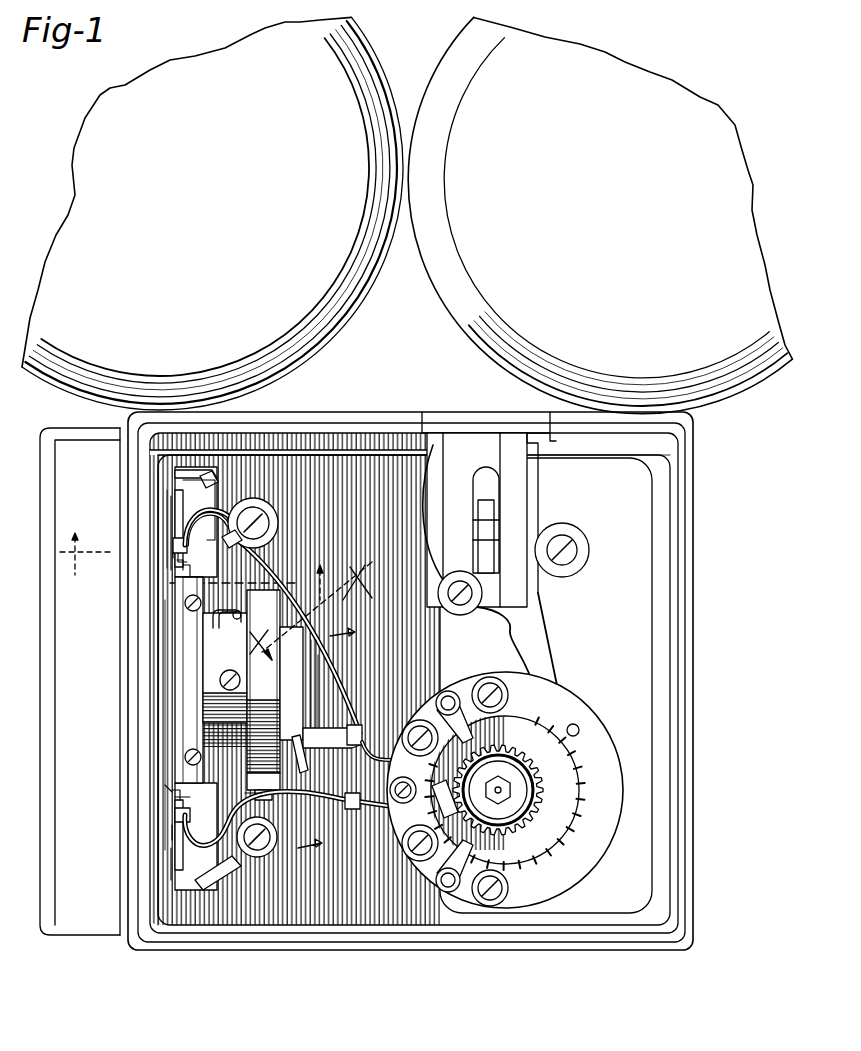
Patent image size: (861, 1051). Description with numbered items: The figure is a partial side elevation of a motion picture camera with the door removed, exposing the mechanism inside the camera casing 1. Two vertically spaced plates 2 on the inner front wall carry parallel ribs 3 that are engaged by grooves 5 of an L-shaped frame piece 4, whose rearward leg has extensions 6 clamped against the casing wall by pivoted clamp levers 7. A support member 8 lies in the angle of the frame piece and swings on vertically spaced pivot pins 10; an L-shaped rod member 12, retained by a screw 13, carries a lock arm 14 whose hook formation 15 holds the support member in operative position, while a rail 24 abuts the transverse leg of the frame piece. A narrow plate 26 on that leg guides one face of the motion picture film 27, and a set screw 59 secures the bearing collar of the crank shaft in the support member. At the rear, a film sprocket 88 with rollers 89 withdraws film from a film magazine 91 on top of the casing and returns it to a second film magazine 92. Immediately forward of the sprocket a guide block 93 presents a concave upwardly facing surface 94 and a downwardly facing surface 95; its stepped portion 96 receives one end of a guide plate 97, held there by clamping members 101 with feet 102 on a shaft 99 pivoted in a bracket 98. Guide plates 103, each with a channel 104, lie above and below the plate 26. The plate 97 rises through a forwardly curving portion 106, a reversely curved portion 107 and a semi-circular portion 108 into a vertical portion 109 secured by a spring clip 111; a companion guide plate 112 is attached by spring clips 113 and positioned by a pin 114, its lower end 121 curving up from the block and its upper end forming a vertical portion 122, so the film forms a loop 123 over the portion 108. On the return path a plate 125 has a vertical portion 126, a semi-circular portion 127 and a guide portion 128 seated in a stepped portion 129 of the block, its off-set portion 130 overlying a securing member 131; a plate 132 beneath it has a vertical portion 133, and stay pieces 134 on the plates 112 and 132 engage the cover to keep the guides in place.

The camera casing 1 is at (683, 465).
The plates 2 is at (179, 497).
The ribs 3 is at (175, 569).
The frame piece 4 is at (165, 644).
The grooves 5 is at (185, 576).
The extensions 6 is at (188, 488).
The clamp levers 7 is at (190, 478).
The support member 8 is at (203, 713).
The pivot pins 10 is at (247, 779).
The rod member 12 is at (233, 614).
The screw 13 is at (198, 566).
The lock arm 14 is at (312, 611).
The hook formation 15 is at (328, 741).
The rail 24 is at (190, 675).
The plate 26 is at (183, 579).
The motion picture film 27 is at (492, 627).
The set screw 59 is at (230, 672).
The film sprocket 88 is at (560, 813).
The rollers 89 is at (419, 720).
The film magazine 91 is at (72, 201).
The second film magazine 92 is at (744, 181).
The guide block 93 is at (430, 800).
The concave upwardly facing surface 94 is at (412, 722).
The downwardly facing surface 95 is at (430, 840).
The stepped portion 96 is at (376, 702).
The guide plate 97 is at (345, 682).
The bracket 98 is at (290, 733).
The shaft 99 is at (300, 730).
The clamping members 101 is at (321, 683).
The feet 102 is at (300, 762).
The guide plates 103 is at (183, 510).
The channel 104 is at (173, 545).
The forwardly curving portion 106 is at (313, 657).
The reversely curved portion 107 is at (227, 549).
The semi-circular portion 108 is at (207, 531).
The vertical portion 109 is at (173, 556).
The spring clip 111 is at (176, 548).
The guide plate 112 is at (270, 560).
The spring clips 113 is at (262, 522).
The pin 114 is at (330, 610).
The upwardly curving lower end 121 is at (398, 788).
The vertical portion 122 is at (220, 480).
The film loop 123 is at (167, 497).
The plate 125 is at (270, 797).
The vertical portion 126 is at (175, 803).
The semi-circular portion 127 is at (172, 832).
The guide portion 128 is at (300, 798).
The stepped portion 129 is at (342, 842).
The off-set portion 130 is at (348, 744).
The securing member 131 is at (352, 807).
The plate 132 is at (268, 848).
The vertical portion 133 is at (232, 882).
The stay pieces 134 is at (240, 484).